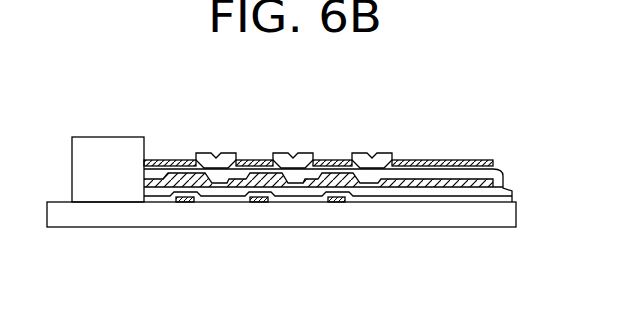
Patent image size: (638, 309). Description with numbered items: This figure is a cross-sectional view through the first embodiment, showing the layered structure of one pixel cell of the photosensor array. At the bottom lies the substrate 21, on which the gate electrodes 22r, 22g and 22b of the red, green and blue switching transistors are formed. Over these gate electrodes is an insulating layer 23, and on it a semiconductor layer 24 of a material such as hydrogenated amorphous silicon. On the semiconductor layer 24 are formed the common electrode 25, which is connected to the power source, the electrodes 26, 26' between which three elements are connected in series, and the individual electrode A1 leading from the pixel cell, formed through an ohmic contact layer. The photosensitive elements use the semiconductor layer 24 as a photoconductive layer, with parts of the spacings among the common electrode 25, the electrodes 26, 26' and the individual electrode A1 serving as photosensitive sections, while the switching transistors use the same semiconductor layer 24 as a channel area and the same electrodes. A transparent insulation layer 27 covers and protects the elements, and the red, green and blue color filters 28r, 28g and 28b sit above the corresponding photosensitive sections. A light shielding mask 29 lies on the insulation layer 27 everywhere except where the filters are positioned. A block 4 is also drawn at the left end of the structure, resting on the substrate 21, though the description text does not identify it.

The light source 4 is at (112, 156).
The substrate 21 is at (509, 217).
The gate electrode 22b is at (184, 202).
The gate electrode 22g is at (260, 202).
The gate electrode 22r is at (337, 202).
The insulating layer 23 is at (406, 199).
The semiconductor layer 24 is at (461, 192).
The common electrode 25 is at (489, 181).
The electrode 26 is at (318, 152).
The electrode 26' is at (273, 152).
The transparent insulation layer 27 is at (478, 174).
The blue color filter 28b is at (212, 152).
The green color filter 28g is at (294, 152).
The red color filter 28r is at (375, 152).
The light shielding mask 29 is at (441, 161).
The individual electrode A1 is at (163, 158).